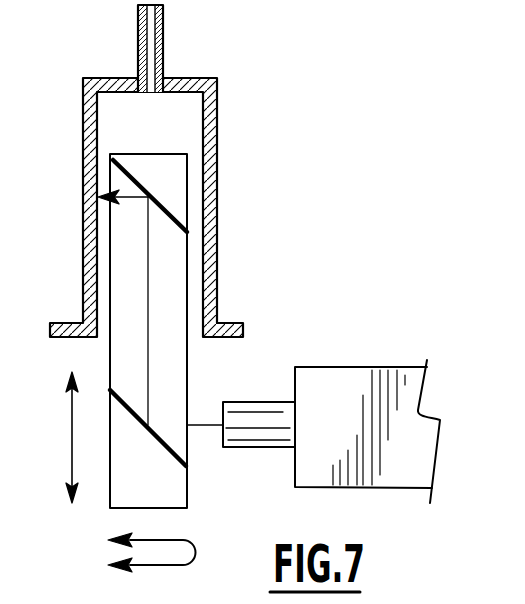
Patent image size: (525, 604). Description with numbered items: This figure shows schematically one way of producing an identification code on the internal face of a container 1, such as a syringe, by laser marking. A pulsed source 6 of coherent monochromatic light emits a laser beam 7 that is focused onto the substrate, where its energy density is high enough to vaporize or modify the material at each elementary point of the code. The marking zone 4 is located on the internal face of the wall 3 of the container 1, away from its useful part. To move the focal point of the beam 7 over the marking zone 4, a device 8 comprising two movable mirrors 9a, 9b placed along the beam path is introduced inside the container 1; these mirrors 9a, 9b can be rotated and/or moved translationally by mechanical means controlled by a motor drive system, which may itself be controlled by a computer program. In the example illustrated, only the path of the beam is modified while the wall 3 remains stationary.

The container 1 is at (217, 161).
The wall 3 is at (211, 216).
The marking zone 4 is at (83, 200).
The pulsed source 6 is at (345, 400).
The laser beam 7 is at (203, 428).
The device 8 is at (120, 352).
The mirror 9a is at (167, 447).
The mirror 9b is at (135, 172).